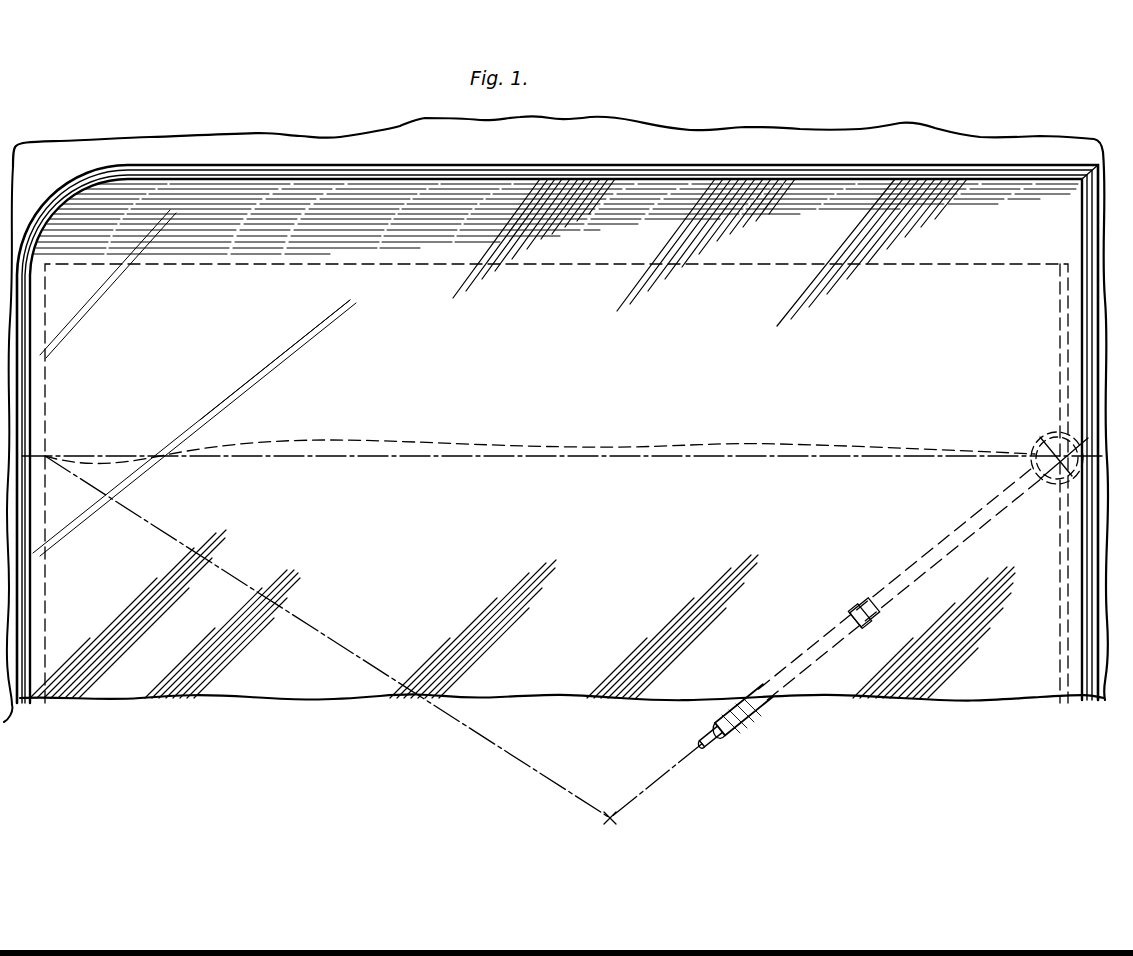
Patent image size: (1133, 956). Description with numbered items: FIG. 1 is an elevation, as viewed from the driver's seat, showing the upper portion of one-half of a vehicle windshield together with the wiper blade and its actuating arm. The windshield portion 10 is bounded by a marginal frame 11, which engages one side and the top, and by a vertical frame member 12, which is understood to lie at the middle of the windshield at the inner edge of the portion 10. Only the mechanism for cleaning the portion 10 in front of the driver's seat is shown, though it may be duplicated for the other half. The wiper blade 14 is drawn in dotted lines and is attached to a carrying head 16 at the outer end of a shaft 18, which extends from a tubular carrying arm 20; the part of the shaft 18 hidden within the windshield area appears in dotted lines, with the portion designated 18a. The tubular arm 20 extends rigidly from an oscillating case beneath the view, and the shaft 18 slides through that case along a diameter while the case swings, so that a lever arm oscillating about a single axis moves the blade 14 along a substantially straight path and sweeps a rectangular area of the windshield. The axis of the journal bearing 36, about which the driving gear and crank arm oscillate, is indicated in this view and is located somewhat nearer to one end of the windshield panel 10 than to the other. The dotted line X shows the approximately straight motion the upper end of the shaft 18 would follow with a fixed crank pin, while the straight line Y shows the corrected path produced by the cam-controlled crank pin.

The windshield portion 10 is at (340, 688).
The marginal frame 11 is at (272, 174).
The vertical frame member 12 is at (1090, 217).
The wiper blade 14 is at (1058, 540).
The carrying head 16 is at (1040, 435).
The shaft 18 is at (718, 744).
The hidden rod portion 18a is at (905, 570).
The tubular carrying arm 20 is at (760, 706).
The journal bearing 36 is at (616, 818).